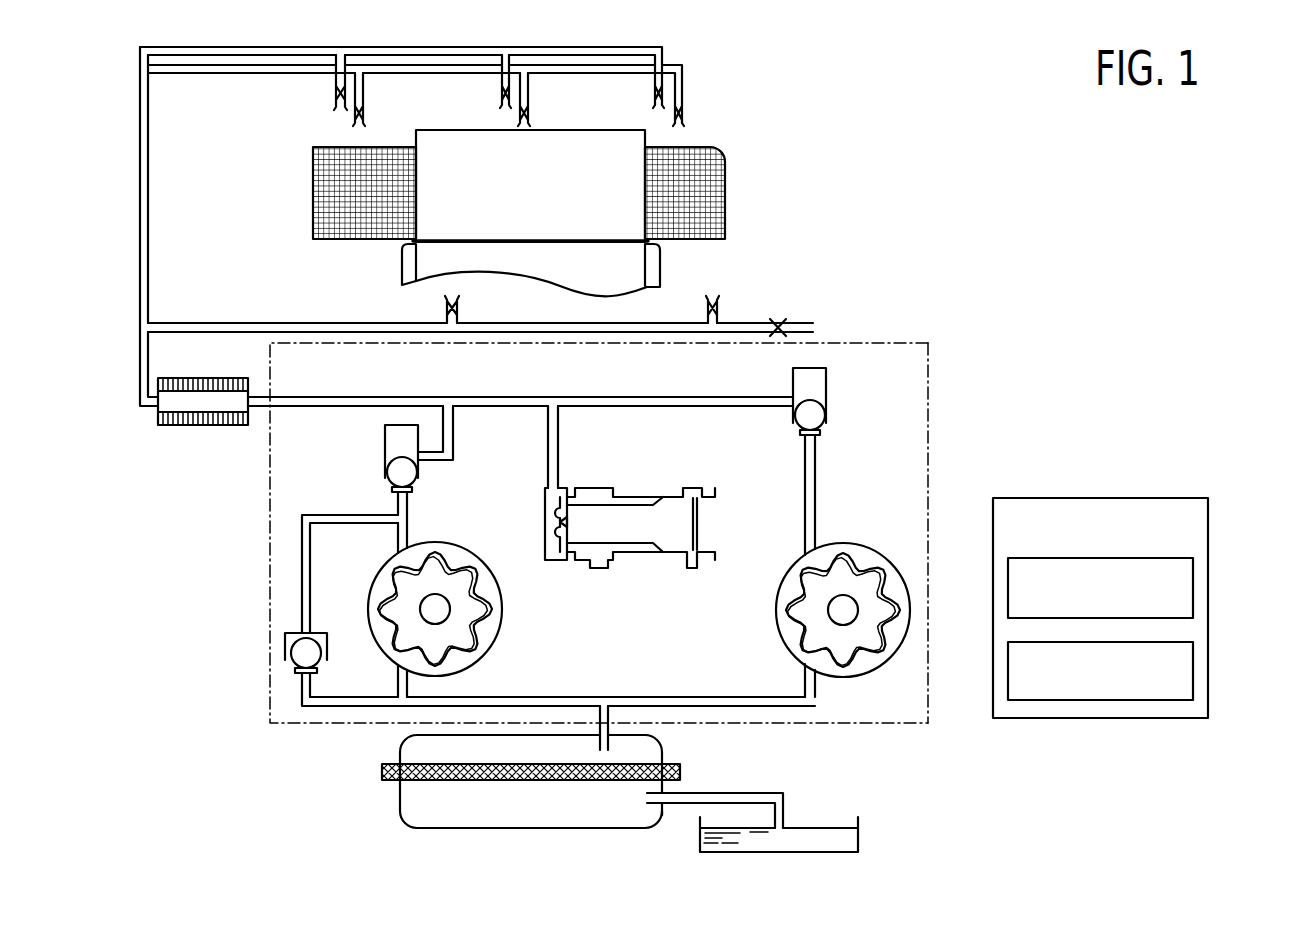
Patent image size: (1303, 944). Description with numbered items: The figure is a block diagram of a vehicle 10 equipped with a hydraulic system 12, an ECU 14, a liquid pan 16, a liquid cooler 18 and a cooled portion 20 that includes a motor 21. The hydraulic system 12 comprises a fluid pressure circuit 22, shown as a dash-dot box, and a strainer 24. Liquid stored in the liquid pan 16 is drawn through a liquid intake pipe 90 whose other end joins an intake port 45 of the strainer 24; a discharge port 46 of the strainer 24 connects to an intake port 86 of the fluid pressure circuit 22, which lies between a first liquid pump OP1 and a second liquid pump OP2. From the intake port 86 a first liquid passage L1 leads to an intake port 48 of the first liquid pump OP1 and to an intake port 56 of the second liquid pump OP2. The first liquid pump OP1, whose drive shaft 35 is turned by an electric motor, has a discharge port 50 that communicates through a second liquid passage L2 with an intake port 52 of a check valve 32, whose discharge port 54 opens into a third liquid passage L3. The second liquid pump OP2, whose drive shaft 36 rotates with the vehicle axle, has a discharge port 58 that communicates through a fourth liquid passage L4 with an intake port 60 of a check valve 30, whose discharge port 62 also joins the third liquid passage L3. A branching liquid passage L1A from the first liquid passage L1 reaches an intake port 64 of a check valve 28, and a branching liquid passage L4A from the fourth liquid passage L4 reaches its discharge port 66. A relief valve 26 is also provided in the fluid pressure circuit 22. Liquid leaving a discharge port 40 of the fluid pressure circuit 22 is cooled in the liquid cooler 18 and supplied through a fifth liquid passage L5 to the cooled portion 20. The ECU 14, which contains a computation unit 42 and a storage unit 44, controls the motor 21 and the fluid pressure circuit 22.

The vehicle 10 is at (1100, 143).
The hydraulic system 12 is at (1018, 350).
The ECU 14 is at (1210, 518).
The liquid pan 16 is at (859, 833).
The liquid cooler 18 is at (199, 378).
The cooled portion 20 is at (745, 126).
The motor 21 is at (464, 138).
The fluid pressure circuit 22 is at (903, 341).
The strainer 24 is at (400, 748).
The relief valve 26 is at (649, 494).
The check valve 28 is at (283, 655).
The check valve 30 is at (385, 443).
The check valve 32 is at (827, 386).
The drive shaft 35 is at (853, 605).
The drive shaft 36 is at (447, 613).
The discharge port 40 is at (263, 416).
The computation unit 42 is at (1194, 572).
The storage unit 44 is at (1194, 655).
The intake port 45 is at (667, 812).
The discharge port 46 is at (592, 730).
The intake port 48 is at (824, 684).
The discharge port 50 is at (823, 538).
The intake port 52 is at (794, 442).
The discharge port 54 is at (786, 391).
The intake port 56 is at (393, 670).
The discharge port 58 is at (414, 545).
The intake port 60 is at (386, 492).
The discharge port 62 is at (424, 448).
The intake port 64 is at (290, 672).
The discharge port 66 is at (293, 627).
The intake port 86 is at (623, 713).
The liquid intake pipe 90 is at (747, 793).
The first liquid passage L1 is at (617, 687).
The branching liquid passage L1A is at (296, 703).
The second liquid passage L2 is at (825, 457).
The third liquid passage L3 is at (581, 387).
The fourth liquid passage L4 is at (414, 512).
The branching liquid passage L4A is at (317, 532).
The fifth liquid passage L5 is at (139, 254).
The first liquid pump OP1 is at (893, 550).
The second liquid pump OP2 is at (511, 595).